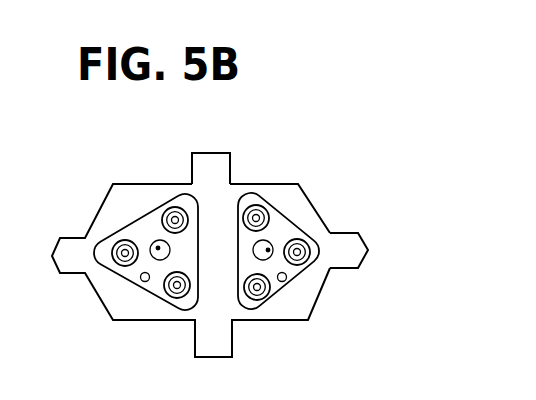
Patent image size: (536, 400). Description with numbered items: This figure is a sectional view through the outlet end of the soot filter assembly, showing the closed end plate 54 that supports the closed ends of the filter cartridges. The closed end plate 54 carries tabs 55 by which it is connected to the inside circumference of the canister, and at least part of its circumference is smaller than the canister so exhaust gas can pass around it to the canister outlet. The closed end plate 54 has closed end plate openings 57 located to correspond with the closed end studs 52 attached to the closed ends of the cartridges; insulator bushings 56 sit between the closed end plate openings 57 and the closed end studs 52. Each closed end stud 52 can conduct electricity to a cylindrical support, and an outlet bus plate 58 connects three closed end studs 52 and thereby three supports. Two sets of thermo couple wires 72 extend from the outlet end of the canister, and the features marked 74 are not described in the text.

The closed end stud 52 is at (122, 248).
The closed end plate 54 is at (282, 184).
The tabs 55 is at (212, 153).
The insulator bushings 56 is at (162, 213).
The closed end plate openings 57 is at (252, 210).
The outlet bus plate 58 is at (157, 283).
The thermo couple wires 72 is at (143, 281).
The fiber opening 74 is at (158, 248).